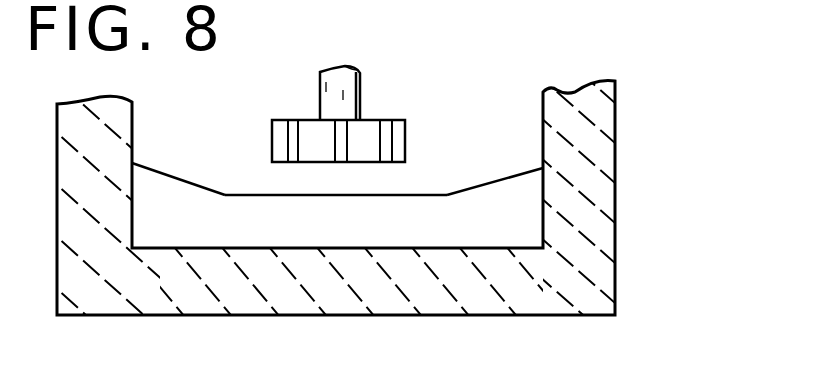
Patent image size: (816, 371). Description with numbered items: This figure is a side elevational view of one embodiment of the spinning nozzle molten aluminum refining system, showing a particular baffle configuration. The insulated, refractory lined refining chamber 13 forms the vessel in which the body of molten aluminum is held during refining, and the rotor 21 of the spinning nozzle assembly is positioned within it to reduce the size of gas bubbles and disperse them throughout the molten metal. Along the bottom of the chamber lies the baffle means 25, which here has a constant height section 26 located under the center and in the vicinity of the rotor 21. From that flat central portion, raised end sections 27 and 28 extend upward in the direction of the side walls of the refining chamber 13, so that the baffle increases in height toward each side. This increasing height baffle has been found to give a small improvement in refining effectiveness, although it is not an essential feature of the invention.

The refining chamber 13 is at (615, 258).
The rotor 21 is at (405, 135).
The baffle means 25 is at (215, 228).
The constant height section 26 is at (318, 195).
The raised end section 27 is at (197, 183).
The raised end section 28 is at (470, 189).